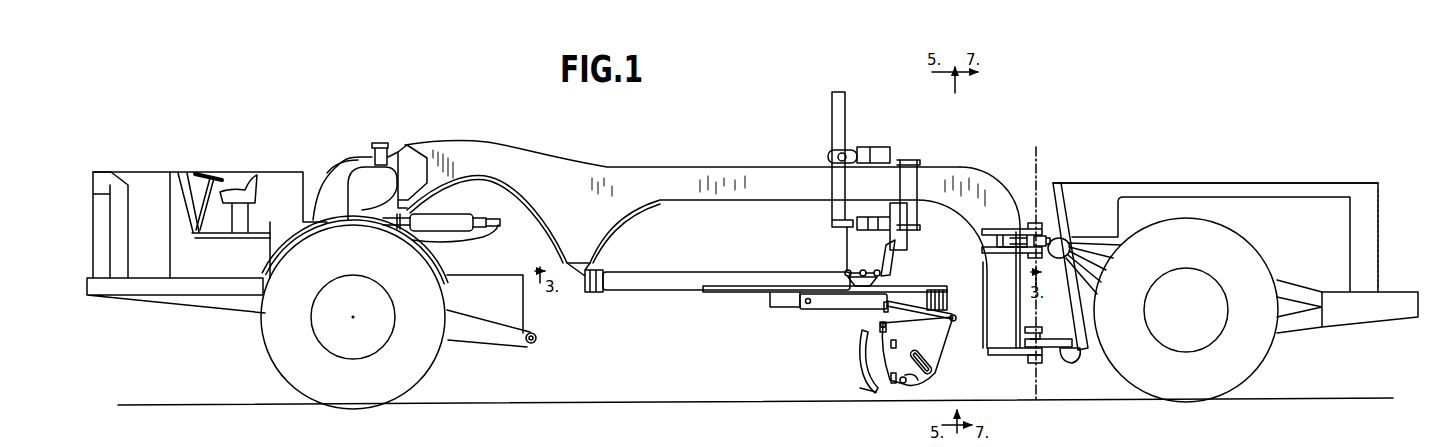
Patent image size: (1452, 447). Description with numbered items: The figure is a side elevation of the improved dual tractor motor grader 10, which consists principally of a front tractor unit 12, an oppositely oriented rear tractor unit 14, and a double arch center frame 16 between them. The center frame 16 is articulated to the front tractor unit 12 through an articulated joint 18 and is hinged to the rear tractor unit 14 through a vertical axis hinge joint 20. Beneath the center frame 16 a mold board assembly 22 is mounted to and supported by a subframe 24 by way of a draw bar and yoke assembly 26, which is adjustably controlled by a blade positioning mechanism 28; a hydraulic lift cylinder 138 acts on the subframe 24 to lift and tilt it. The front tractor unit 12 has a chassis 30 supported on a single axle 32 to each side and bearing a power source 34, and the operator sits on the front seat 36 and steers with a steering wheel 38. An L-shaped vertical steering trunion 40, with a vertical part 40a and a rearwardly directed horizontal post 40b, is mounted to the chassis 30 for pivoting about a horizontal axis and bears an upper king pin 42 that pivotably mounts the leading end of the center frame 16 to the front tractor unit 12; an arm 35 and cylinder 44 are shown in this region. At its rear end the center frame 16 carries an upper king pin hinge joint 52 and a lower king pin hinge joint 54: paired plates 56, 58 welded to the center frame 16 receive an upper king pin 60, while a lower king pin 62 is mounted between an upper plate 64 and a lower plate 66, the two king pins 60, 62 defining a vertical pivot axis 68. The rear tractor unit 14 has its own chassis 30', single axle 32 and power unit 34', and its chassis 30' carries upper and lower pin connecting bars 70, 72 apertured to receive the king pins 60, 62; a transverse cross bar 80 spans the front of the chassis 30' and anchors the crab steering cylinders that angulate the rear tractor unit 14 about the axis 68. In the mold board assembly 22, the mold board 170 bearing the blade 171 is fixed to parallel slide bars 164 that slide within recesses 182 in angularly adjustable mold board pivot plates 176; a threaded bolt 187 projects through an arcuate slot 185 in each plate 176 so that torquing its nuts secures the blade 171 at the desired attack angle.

The dual tractor motor grader 10 is at (564, 143).
The front tractor unit 12 is at (226, 158).
The rear tractor unit 14 is at (1156, 181).
The double arch center frame 16 is at (658, 166).
The articulated joint 18 is at (363, 140).
The vertical axis hinge joint 20 is at (1022, 200).
The mold board assembly 22 is at (893, 372).
The subframe 24 is at (773, 300).
The draw bar and yoke assembly 26 is at (722, 272).
The blade positioning mechanism 28 is at (882, 147).
The chassis 30 is at (267, 271).
The chassis 30' is at (1347, 321).
The single axle 32 is at (267, 337).
The power source 34 is at (210, 205).
The power unit 34' is at (1219, 165).
The frame arm 35 is at (493, 338).
The front seat 36 is at (252, 199).
The steering wheel 38 is at (207, 165).
The vertical steering trunion 40 is at (343, 206).
The vertical part 40a is at (357, 158).
The horizontal post 40b is at (465, 241).
The upper king pin 42 is at (384, 141).
The hydraulic cylinder 44 is at (451, 216).
The upper king pin hinge joint 52 is at (996, 258).
The lower king pin hinge joint 54 is at (1027, 365).
The plate 56 is at (992, 229).
The plate 58 is at (982, 249).
The upper king pin 60 is at (1044, 228).
The lower king pin 62 is at (1040, 330).
The upper plate 64 is at (1027, 341).
The lower plate 66 is at (1010, 357).
The vertical pivot axis 68 is at (1039, 176).
The upper pin connecting bar 70 is at (1063, 240).
The lower pin connecting bar 72 is at (1069, 364).
The cross bar 80 is at (1072, 249).
The lift cylinder 138 is at (830, 119).
The slide bars 164 is at (885, 305).
The mold board 170 is at (862, 334).
The blade 171 is at (860, 392).
The mold board pivot plates 176 is at (938, 334).
The recesses 182 is at (928, 353).
The arcuate slots 185 is at (910, 383).
The threaded bolt 187 is at (929, 360).